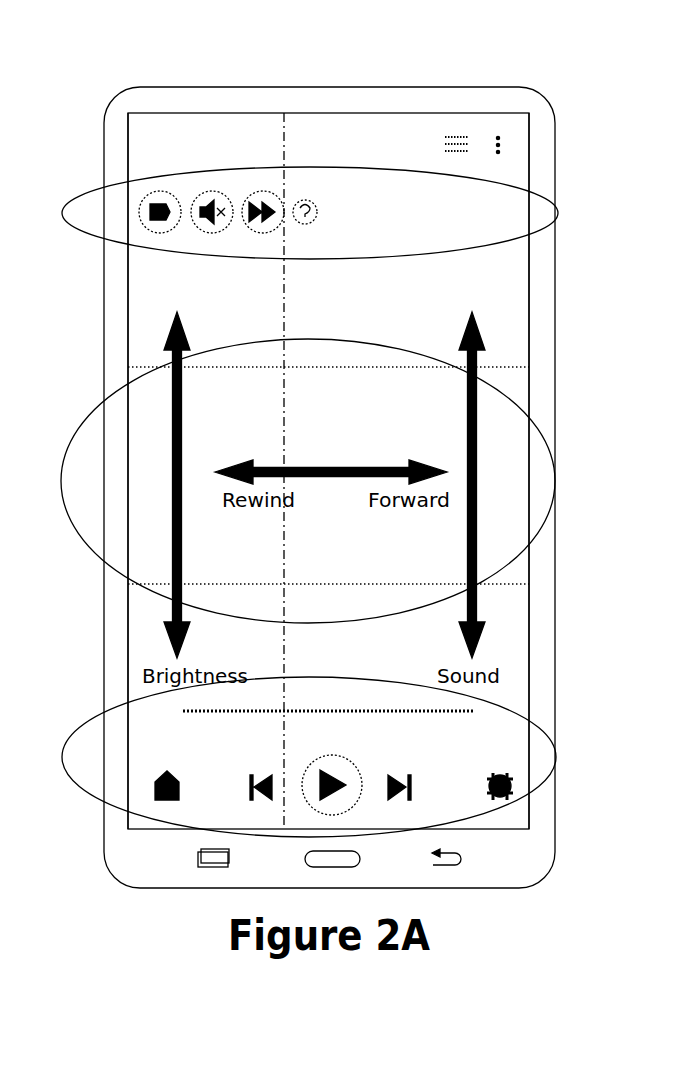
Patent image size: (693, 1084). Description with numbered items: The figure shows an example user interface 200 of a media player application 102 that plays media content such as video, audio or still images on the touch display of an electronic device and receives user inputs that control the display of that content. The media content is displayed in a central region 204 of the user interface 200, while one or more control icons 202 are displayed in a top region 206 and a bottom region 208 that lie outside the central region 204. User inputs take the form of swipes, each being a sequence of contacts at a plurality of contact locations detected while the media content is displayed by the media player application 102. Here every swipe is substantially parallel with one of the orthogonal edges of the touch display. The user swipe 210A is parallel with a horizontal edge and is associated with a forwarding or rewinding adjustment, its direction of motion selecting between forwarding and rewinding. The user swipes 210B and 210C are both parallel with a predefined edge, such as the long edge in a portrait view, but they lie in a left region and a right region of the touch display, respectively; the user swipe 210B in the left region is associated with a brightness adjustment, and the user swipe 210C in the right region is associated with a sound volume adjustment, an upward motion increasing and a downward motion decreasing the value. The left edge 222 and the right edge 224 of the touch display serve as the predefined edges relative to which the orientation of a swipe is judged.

The user interface 200 is at (584, 92).
The media player application 102 is at (328, 471).
The control icon 202 is at (272, 213).
The central region 204 is at (548, 445).
The top region 206 is at (553, 206).
The bottom region 208 is at (548, 733).
The user swipe 210A is at (303, 465).
The user swipe 210B is at (182, 422).
The user swipe 210C is at (466, 514).
The left edge 222 is at (129, 320).
The right edge 224 is at (530, 318).